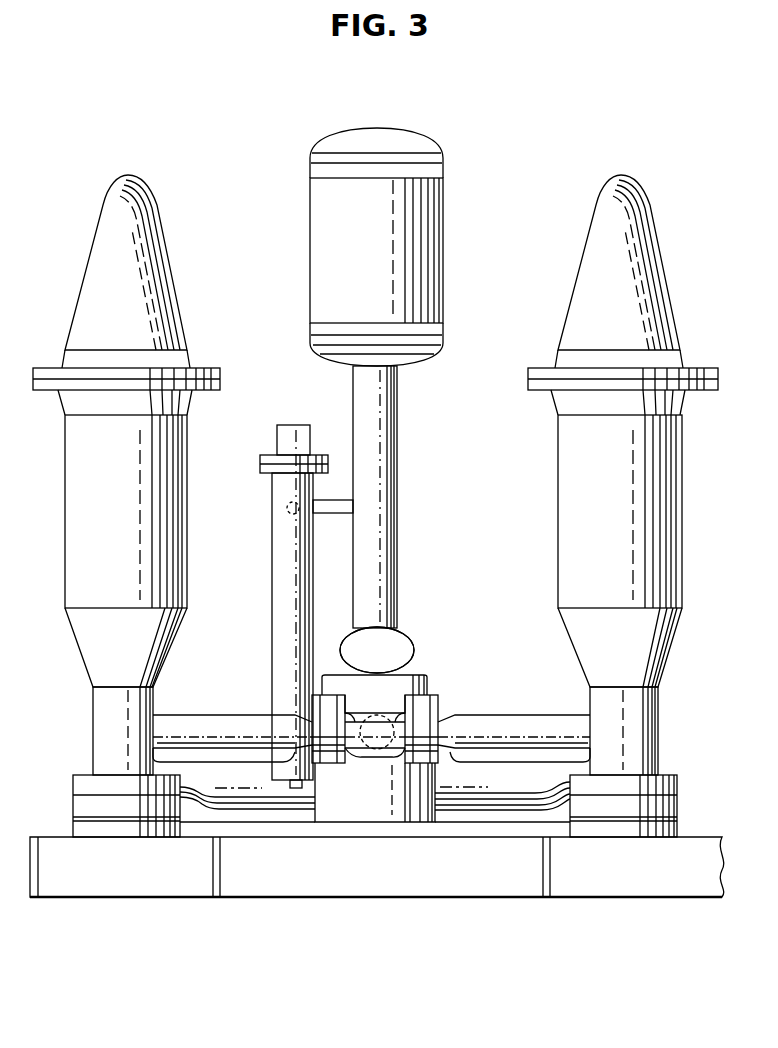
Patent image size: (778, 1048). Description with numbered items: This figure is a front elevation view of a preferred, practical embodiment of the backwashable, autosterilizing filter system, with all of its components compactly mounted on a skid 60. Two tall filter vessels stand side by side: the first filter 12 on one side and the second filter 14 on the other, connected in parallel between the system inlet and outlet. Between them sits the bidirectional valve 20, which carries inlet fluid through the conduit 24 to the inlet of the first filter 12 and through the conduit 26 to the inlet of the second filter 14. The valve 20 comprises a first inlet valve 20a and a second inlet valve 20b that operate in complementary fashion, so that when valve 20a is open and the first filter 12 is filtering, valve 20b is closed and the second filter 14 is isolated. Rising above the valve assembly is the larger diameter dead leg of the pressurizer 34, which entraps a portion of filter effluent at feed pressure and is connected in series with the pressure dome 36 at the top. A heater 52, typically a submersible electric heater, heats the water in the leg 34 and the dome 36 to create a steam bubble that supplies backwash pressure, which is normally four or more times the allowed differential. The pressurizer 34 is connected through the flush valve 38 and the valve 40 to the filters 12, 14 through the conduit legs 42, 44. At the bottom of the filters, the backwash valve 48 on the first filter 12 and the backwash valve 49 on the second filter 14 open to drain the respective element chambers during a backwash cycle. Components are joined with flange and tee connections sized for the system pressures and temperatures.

The first filter 12 is at (137, 503).
The second filter 14 is at (630, 515).
The bidirectional valve 20 is at (378, 730).
The first inlet valve 20a is at (333, 742).
The second inlet valve 20b is at (420, 758).
The conduit 24 is at (216, 722).
The conduit 26 is at (522, 722).
The pressurizer 34 is at (380, 450).
The pressure dome 36 is at (384, 222).
The flush valve 38 is at (411, 635).
The valve 40 is at (377, 650).
The conduit leg 42 is at (243, 785).
The conduit leg 44 is at (541, 787).
The backwash valve 48 is at (90, 801).
The backwash valve 49 is at (655, 802).
The heater 52 is at (283, 557).
The skid 60 is at (57, 857).